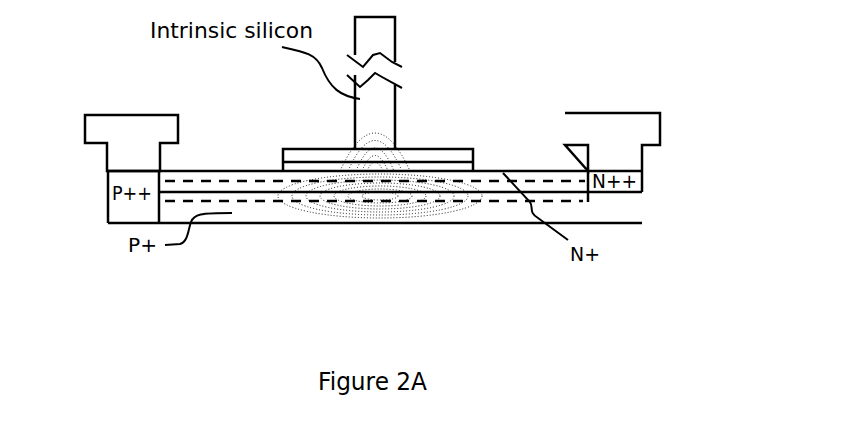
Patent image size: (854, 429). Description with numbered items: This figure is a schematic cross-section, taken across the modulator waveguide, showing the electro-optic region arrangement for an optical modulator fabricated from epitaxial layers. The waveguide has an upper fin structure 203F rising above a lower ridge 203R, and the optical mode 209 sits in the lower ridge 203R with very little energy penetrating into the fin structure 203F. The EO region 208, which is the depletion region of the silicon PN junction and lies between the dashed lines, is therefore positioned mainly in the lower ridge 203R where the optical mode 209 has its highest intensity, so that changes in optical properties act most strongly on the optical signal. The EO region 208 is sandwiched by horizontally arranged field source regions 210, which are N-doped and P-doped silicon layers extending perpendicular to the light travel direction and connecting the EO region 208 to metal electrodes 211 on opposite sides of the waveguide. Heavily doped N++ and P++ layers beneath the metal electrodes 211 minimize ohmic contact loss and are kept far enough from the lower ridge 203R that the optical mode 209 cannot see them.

The fin structure 203F is at (382, 45).
The lower ridge 203R is at (455, 158).
The EO region 208 is at (413, 182).
The optical mode 209 is at (343, 173).
The field source regions 210 is at (273, 218).
The metal electrodes 211 is at (132, 133).